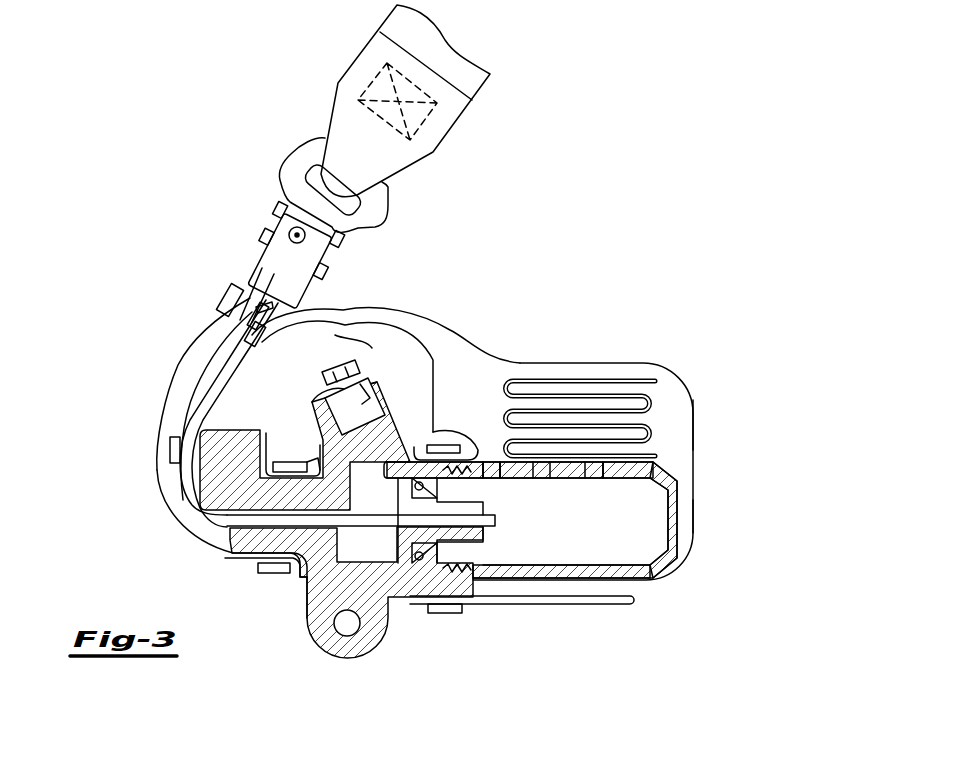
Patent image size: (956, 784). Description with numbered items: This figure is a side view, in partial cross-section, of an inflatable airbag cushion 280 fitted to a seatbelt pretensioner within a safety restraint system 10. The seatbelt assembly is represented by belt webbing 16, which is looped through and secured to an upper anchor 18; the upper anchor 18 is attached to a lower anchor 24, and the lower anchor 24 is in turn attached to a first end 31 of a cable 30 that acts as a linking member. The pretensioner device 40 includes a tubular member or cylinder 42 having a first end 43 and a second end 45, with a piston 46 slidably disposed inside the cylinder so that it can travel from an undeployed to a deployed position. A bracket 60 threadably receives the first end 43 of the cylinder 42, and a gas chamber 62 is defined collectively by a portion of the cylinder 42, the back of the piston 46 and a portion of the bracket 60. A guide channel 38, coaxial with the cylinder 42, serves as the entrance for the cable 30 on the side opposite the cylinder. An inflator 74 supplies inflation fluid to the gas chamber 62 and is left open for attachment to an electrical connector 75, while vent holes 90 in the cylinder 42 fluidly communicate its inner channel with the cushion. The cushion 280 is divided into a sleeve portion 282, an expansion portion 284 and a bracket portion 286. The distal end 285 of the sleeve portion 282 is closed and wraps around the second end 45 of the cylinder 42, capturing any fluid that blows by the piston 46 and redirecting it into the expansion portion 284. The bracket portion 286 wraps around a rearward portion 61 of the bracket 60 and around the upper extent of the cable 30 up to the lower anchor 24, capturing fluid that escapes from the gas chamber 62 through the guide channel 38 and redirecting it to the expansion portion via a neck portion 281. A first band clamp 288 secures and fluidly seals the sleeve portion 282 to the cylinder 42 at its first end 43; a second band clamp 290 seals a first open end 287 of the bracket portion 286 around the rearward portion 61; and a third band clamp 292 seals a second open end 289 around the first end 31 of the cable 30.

The safety restraint system 10 is at (579, 298).
The belt webbing 16 is at (335, 115).
The upper anchor 18 is at (290, 168).
The lower anchor 24 is at (258, 252).
The cable 30 is at (188, 419).
The first end of cable 31 is at (230, 325).
The guide channel 38 is at (212, 532).
The pretensioner device 40 is at (240, 580).
The tubular member 42 is at (560, 598).
The first end of cylinder 43 is at (482, 598).
The second end of cylinder 45 is at (645, 588).
The piston 46 is at (470, 492).
The bracket 60 is at (386, 638).
The rearward portion of bracket 61 is at (232, 430).
The gas chamber 62 is at (375, 473).
The inflation fluid dispensing apparatus 74 is at (362, 405).
The electrical connector 75 is at (345, 330).
The vent holes 90 is at (492, 480).
The inflatable airbag cushion 280 is at (612, 360).
The neck portion 281 is at (400, 318).
The sleeve portion 282 is at (603, 606).
The expansion portion 284 is at (695, 410).
The distal end of sleeve portion 285 is at (697, 540).
The bracket portion 286 is at (160, 490).
The first open end of bracket portion 287 is at (287, 488).
The first band clamp 288 is at (445, 443).
The second open end of bracket portion 289 is at (255, 316).
The second band clamp 290 is at (272, 574).
The third band clamp 292 is at (225, 295).